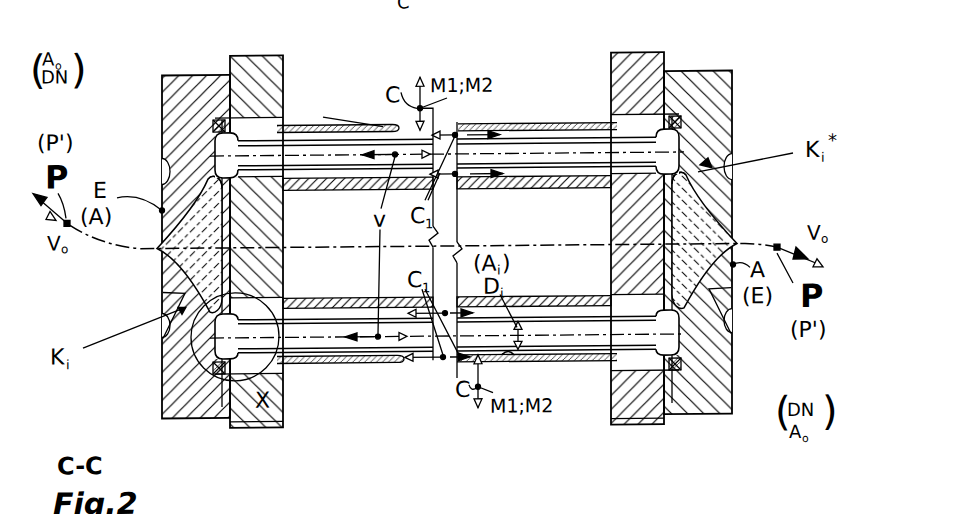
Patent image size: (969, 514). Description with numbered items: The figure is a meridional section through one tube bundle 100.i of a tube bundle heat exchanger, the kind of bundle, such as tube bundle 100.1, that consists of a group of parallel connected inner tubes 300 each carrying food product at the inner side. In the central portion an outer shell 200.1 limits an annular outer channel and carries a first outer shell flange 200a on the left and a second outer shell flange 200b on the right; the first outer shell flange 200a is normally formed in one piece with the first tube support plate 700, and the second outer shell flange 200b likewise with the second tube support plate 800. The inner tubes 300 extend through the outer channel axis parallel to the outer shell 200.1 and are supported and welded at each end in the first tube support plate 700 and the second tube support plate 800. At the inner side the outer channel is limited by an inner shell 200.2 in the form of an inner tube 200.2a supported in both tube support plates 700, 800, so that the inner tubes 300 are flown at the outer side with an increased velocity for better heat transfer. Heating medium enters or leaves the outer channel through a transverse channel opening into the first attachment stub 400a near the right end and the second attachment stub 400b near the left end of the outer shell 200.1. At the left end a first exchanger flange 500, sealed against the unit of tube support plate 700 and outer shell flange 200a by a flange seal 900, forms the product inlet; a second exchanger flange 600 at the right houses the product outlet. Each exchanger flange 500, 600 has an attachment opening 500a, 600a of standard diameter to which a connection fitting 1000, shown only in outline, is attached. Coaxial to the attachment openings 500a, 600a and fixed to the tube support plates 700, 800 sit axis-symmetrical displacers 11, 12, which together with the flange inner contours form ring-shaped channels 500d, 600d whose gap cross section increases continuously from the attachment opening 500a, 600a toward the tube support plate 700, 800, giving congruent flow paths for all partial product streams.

The first exchanger flange 500 is at (183, 394).
The attachment opening 500a is at (162, 290).
The ring-shaped channel 500d is at (193, 170).
The displacer 11 is at (158, 267).
The displacer 12 is at (727, 219).
The first outer shell flange 200a is at (258, 70).
The second outer shell flange 200b is at (630, 74).
The second exchanger flange 600 is at (710, 400).
The attachment opening 600a is at (733, 194).
The ring-shaped channel 600d is at (693, 162).
The flange seal 900 is at (220, 370).
The outer shell 200.1 is at (510, 127).
The inner tube 200.2a is at (525, 185).
The inner shell 200.2 is at (533, 303).
The inner tubes 300 is at (347, 154).
The first attachment stub 400a is at (510, 370).
The second attachment stub 400b is at (398, 127).
The tube bundle 100.i is at (435, 390).
The tube bundle 100.1 is at (443, 457).
The first tube support plate 700 is at (259, 372).
The second tube support plate 800 is at (630, 246).
The connection fitting 1000 is at (67, 220).